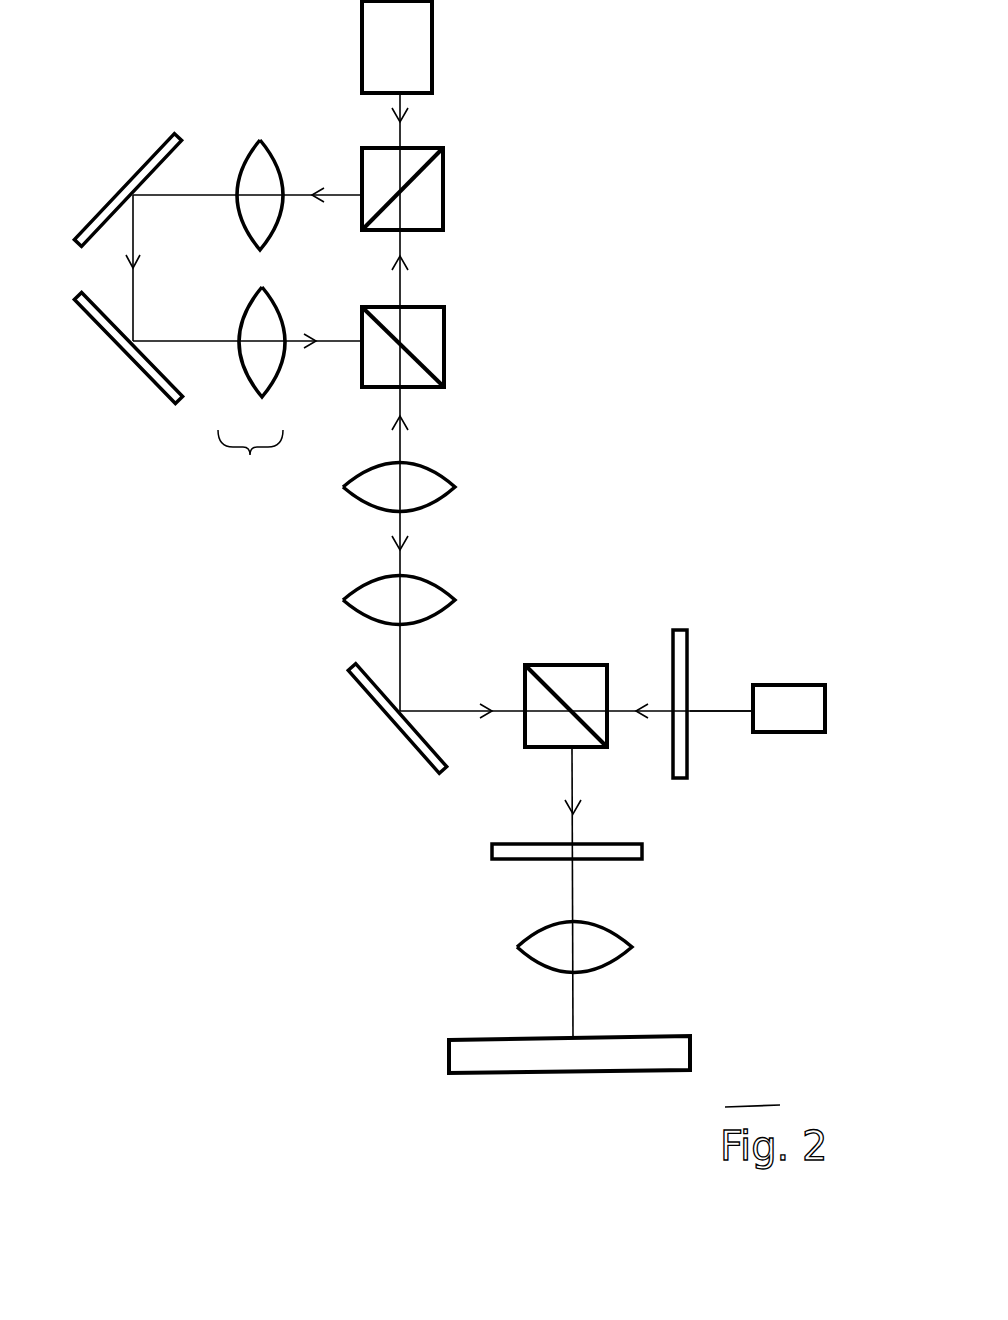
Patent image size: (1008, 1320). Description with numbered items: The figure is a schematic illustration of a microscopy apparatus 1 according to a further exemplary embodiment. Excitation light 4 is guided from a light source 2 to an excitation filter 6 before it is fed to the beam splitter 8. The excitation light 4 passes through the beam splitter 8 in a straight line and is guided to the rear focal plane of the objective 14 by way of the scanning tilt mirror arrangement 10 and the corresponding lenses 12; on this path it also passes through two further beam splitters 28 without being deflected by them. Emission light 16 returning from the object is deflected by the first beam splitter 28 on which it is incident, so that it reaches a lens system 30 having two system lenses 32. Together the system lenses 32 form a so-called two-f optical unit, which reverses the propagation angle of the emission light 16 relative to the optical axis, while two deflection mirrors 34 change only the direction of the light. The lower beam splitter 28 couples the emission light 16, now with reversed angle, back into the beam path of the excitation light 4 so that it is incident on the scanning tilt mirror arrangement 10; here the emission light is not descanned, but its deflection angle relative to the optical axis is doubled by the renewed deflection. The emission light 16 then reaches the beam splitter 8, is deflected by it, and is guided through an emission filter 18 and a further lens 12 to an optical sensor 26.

The microscopy apparatus 1 is at (646, 285).
The light source 2 is at (793, 695).
The excitation light 4 is at (718, 712).
The excitation filter 6 is at (688, 652).
The beam splitter 8 is at (582, 664).
The scanning tilt mirror arrangement 10 is at (370, 700).
The lenses 12 is at (437, 472).
The objective 14 is at (433, 52).
The emission light 16 is at (192, 195).
The emission filter 18 is at (640, 860).
The optical sensor 26 is at (450, 1062).
The beam splitters 28 is at (445, 188).
The lens system 30 is at (250, 466).
The system lenses 32 is at (273, 233).
The deflection mirrors 34 is at (105, 205).